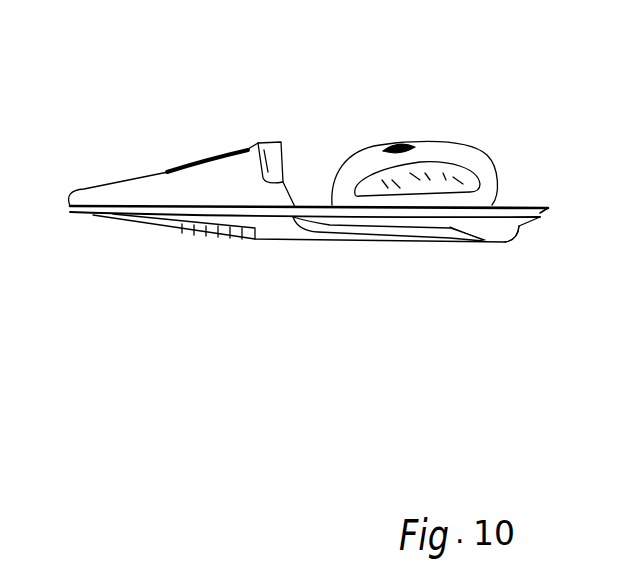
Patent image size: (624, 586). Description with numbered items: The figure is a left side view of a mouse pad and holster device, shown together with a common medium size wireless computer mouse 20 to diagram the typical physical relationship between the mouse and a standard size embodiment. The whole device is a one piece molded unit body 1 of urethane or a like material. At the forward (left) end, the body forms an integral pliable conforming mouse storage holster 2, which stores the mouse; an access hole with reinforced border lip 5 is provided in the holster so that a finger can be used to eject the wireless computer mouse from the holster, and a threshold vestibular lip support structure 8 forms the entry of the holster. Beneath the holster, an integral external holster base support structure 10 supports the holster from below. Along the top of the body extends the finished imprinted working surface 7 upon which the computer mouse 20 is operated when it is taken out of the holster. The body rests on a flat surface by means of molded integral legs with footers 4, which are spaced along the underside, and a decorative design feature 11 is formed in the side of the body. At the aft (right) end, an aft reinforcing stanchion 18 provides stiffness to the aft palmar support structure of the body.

The one piece molded unit body 1 is at (97, 212).
The integral pliable conforming mouse storage holster 2 is at (190, 190).
The molded integral leg with footer 4 is at (267, 233).
The access hole with reinforced border lip 5 is at (206, 160).
The finished imprinted working surface 7 is at (310, 205).
The threshold vestibular lip support structure 8 is at (268, 160).
The integral external holster base support structure 10 is at (207, 223).
The decorative design feature 11 is at (450, 233).
The aft reinforcing stanchion 18 is at (524, 221).
The common medium size wireless computer mouse 20 is at (433, 151).